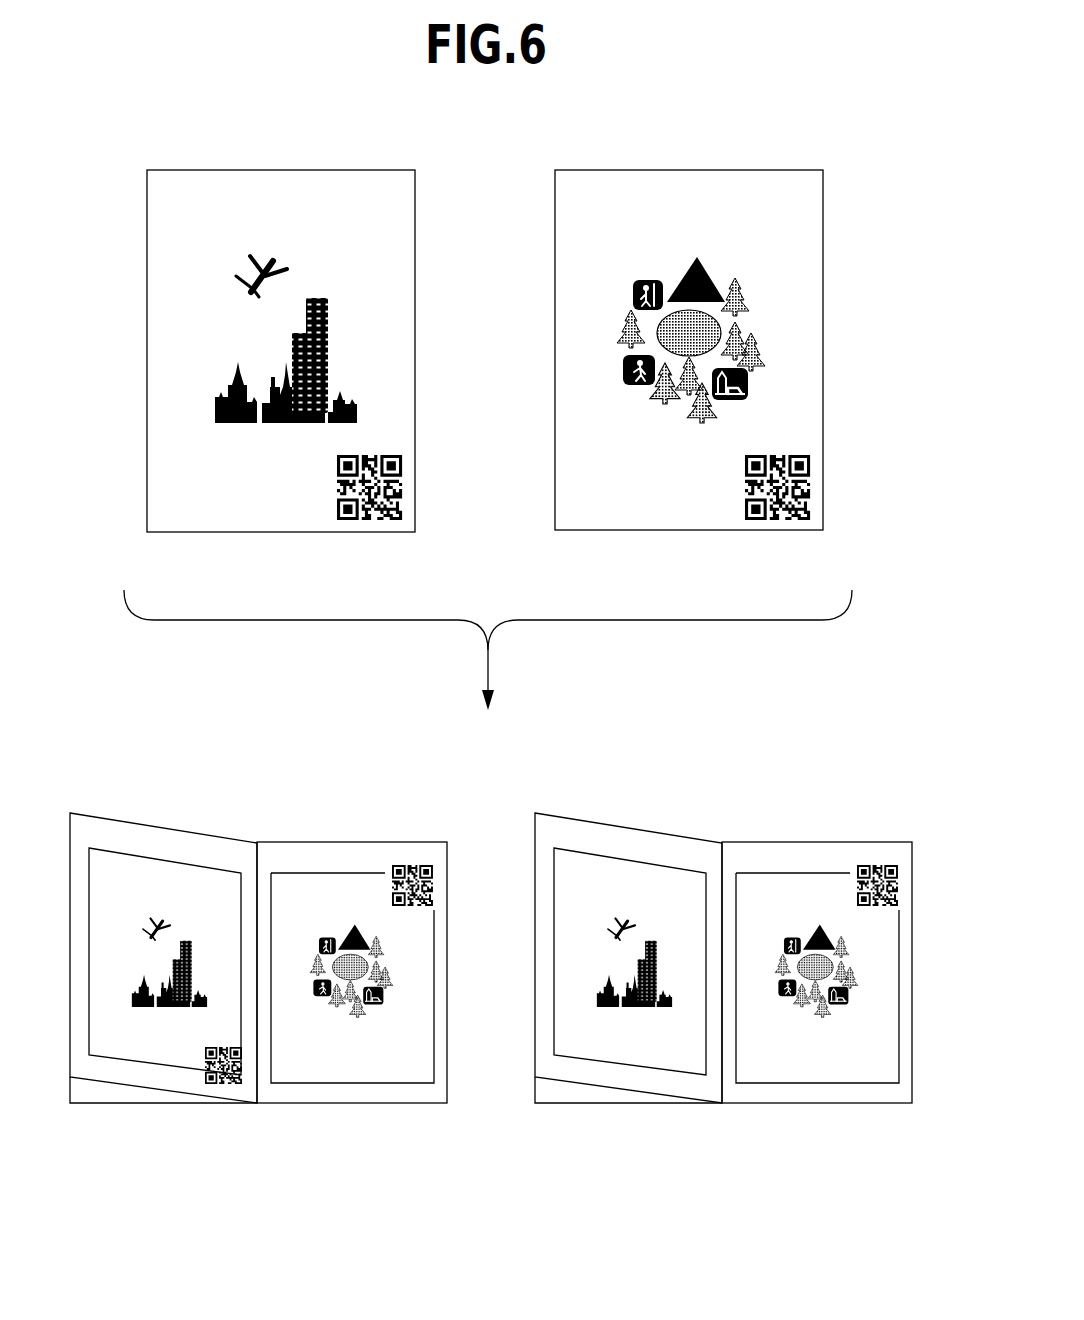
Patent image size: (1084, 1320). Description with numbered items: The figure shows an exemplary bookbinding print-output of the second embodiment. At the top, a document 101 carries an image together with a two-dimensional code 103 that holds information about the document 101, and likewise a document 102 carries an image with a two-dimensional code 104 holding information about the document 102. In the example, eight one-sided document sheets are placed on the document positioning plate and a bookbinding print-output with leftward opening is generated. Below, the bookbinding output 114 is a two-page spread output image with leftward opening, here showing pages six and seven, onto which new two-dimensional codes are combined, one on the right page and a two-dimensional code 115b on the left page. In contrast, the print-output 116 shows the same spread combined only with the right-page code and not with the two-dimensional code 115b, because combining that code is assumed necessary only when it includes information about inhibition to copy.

The document 101 is at (276, 170).
The document 102 is at (684, 170).
The two-dimensional code 103 is at (368, 522).
The two-dimensional code 104 is at (776, 522).
The bookbinding output 114 is at (257, 841).
The two-dimensional code 115b is at (226, 1085).
The print-output 116 is at (724, 841).